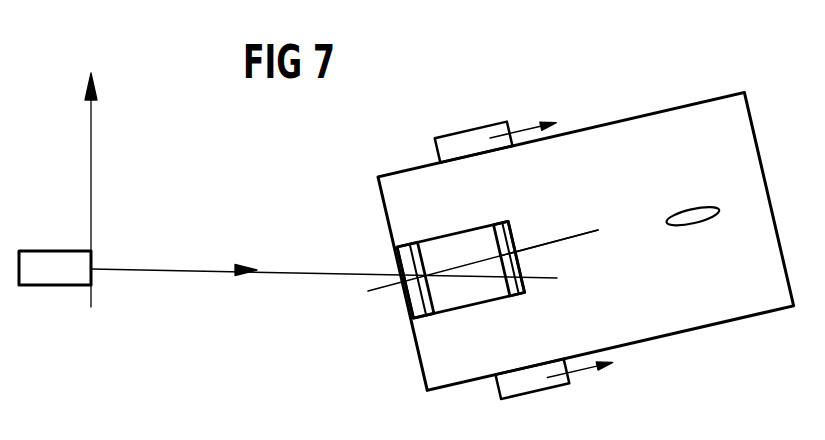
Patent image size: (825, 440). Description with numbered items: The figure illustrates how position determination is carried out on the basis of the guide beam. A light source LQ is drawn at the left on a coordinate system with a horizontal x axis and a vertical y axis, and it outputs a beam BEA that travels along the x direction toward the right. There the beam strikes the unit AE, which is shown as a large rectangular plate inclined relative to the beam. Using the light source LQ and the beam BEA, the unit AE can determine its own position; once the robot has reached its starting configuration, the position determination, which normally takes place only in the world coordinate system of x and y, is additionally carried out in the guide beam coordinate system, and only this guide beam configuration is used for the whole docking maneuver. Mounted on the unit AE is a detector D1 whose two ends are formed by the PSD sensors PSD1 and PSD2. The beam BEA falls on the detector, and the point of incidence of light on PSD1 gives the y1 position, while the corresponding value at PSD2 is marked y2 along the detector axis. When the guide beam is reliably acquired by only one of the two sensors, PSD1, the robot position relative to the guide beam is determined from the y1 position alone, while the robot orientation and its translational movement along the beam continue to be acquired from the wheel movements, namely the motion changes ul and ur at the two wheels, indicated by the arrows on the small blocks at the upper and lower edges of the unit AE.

The light source LQ is at (57, 273).
The beam BEA is at (167, 270).
The unit AE is at (586, 241).
The detector D1 is at (460, 269).
The PSD sensor PSD1 is at (415, 280).
The second position sensitive detector PSD2 is at (508, 258).
The motion change at the left wheel ul is at (497, 137).
The motion change at the right wheel ur is at (555, 373).
The y1 position y1 is at (400, 279).
The second detector coordinate y2 is at (522, 271).
The x coordinate x is at (245, 287).
The y coordinate y is at (82, 185).